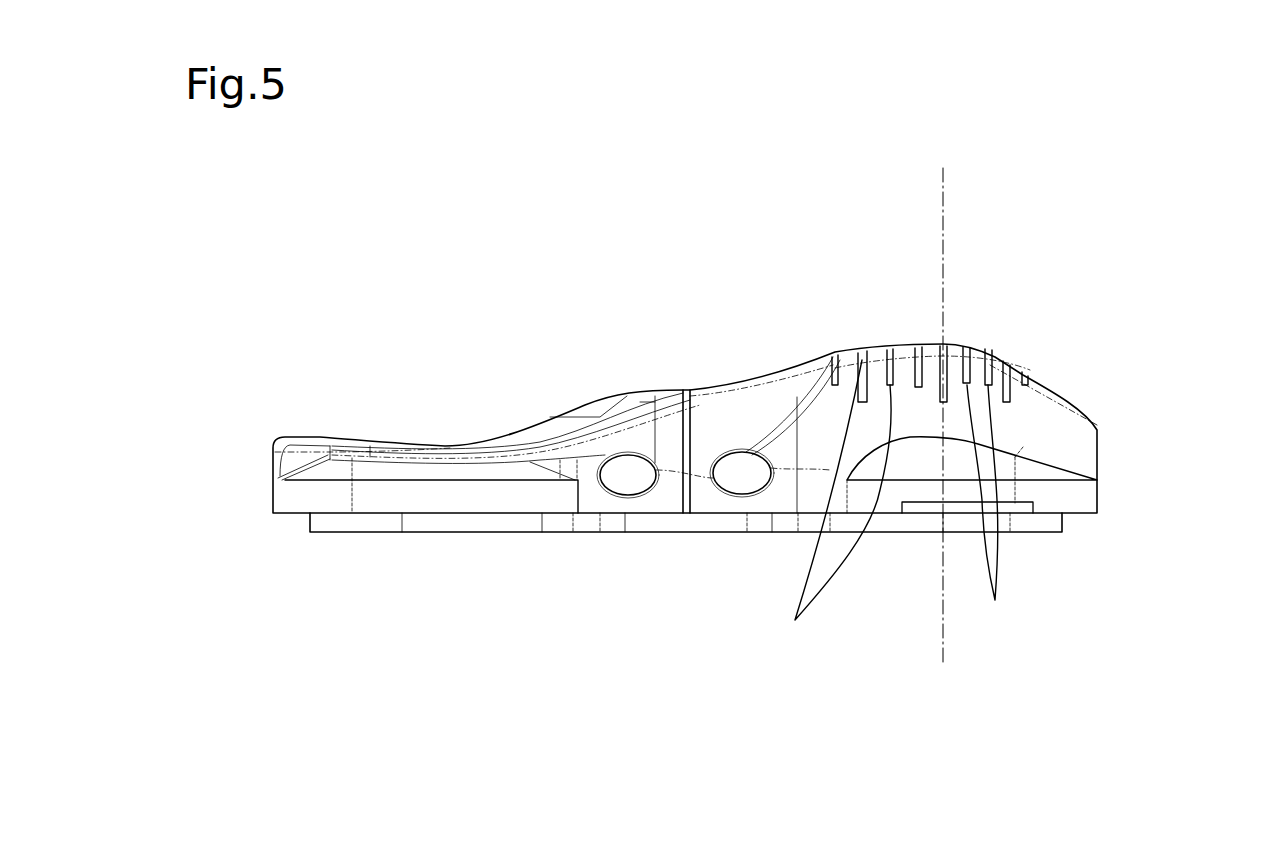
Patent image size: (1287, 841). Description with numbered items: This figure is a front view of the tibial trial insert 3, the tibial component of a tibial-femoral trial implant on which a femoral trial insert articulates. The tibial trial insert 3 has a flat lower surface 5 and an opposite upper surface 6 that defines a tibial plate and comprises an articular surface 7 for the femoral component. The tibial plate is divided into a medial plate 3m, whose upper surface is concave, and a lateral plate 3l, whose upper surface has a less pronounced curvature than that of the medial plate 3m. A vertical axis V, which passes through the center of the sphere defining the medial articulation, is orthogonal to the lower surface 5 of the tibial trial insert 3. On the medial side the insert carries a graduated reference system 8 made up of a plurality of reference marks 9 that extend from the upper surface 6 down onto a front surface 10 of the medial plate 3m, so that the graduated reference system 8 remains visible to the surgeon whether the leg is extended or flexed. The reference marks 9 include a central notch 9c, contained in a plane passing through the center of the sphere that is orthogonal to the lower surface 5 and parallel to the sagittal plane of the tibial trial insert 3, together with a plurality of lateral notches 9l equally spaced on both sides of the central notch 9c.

The tibial trial insert 3 is at (1133, 252).
The lateral plate 3l is at (363, 438).
The medial plate 3m is at (1057, 392).
The lower surface 5 is at (1036, 538).
The upper surface 6 is at (704, 386).
The articular surface 7 is at (460, 443).
The graduated reference system 8 is at (985, 340).
The reference marks 9 is at (895, 357).
The central notch 9c is at (946, 346).
The lateral notches 9l is at (888, 506).
The front surface 10 is at (1067, 445).
The vertical axis V is at (942, 182).